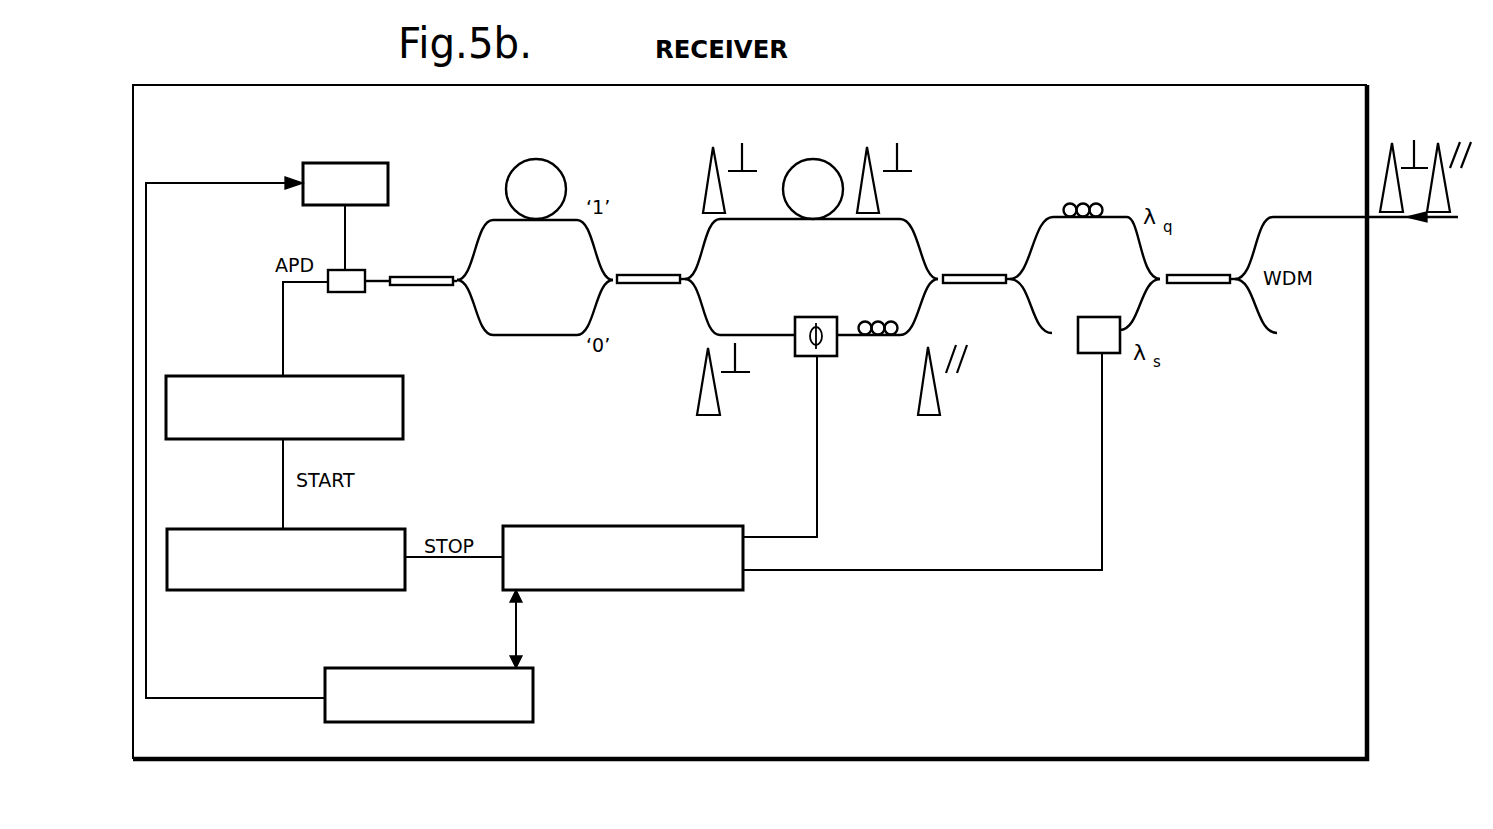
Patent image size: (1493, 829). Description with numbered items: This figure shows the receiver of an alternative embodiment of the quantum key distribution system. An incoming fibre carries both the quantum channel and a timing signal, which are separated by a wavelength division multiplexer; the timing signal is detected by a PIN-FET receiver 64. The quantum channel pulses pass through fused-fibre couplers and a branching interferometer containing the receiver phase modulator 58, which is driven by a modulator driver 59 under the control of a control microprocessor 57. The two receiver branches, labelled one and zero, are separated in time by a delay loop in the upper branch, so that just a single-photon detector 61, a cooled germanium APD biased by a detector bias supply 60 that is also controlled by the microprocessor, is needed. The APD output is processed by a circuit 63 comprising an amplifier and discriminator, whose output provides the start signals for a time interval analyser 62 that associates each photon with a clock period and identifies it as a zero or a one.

The control microprocessor 57 is at (533, 718).
The receiver phase modulator 58 is at (840, 345).
The modulator driver 59 is at (743, 592).
The detector bias supply 60 is at (388, 194).
The single-photon detector 61 is at (365, 272).
The time interval analyser 62 is at (404, 592).
The amplifier and discriminator circuit 63 is at (405, 417).
The PIN-FET receiver 64 is at (1097, 355).